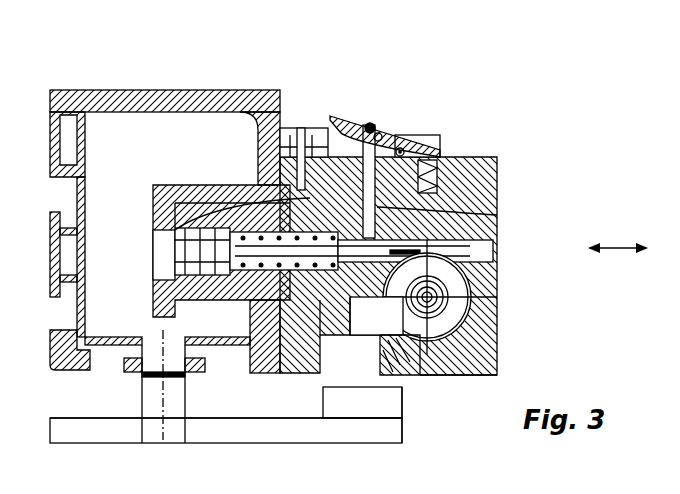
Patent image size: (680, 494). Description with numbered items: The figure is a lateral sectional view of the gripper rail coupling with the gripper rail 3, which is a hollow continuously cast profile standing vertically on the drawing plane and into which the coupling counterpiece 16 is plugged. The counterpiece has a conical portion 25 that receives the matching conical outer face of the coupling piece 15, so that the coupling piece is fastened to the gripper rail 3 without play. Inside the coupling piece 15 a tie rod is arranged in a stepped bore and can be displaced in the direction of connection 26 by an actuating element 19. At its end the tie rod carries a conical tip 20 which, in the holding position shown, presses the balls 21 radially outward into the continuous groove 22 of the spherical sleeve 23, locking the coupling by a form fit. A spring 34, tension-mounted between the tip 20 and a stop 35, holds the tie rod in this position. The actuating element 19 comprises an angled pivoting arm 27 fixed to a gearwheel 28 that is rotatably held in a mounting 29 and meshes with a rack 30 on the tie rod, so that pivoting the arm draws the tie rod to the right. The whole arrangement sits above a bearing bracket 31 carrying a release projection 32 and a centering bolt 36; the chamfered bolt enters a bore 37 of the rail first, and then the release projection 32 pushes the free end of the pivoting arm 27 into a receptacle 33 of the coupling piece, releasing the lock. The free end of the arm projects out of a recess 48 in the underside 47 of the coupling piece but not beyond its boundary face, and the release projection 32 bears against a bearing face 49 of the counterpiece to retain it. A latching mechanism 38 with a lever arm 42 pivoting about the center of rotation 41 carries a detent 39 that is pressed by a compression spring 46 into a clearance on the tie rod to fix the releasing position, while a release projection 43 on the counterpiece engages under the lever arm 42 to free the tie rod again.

The gripper rail 3 is at (93, 65).
The coupling piece 15 is at (226, 456).
The coupling counterpiece 16 is at (235, 215).
The actuating element 19 is at (503, 303).
The conical tip 20 is at (200, 243).
The balls 21 is at (207, 267).
The continuous groove 22 is at (215, 212).
The spherical sleeve 23 is at (190, 215).
The conical portion 25 is at (262, 215).
The direction of connection 26 is at (28, 256).
The pivoting arm 27 is at (377, 313).
The gearwheel 28 is at (456, 311).
The mounting 29 is at (447, 293).
The rack 30 is at (435, 237).
The bearing bracket 31 is at (388, 489).
The release projection 32 is at (370, 407).
The receptacle 33 is at (383, 342).
The spring 34 is at (243, 92).
The stop 35 is at (440, 440).
The centering bolt 36 is at (173, 408).
The bore 37 is at (153, 362).
The latching mechanism 38 is at (386, 94).
The detent 39 is at (497, 215).
The center of rotation 41 is at (400, 148).
The lever arm 42 is at (330, 117).
The release projection 43 is at (322, 140).
The compression spring 46 is at (446, 172).
The underside 47 is at (460, 382).
The recess 48 is at (352, 360).
The bearing face 49 is at (330, 348).